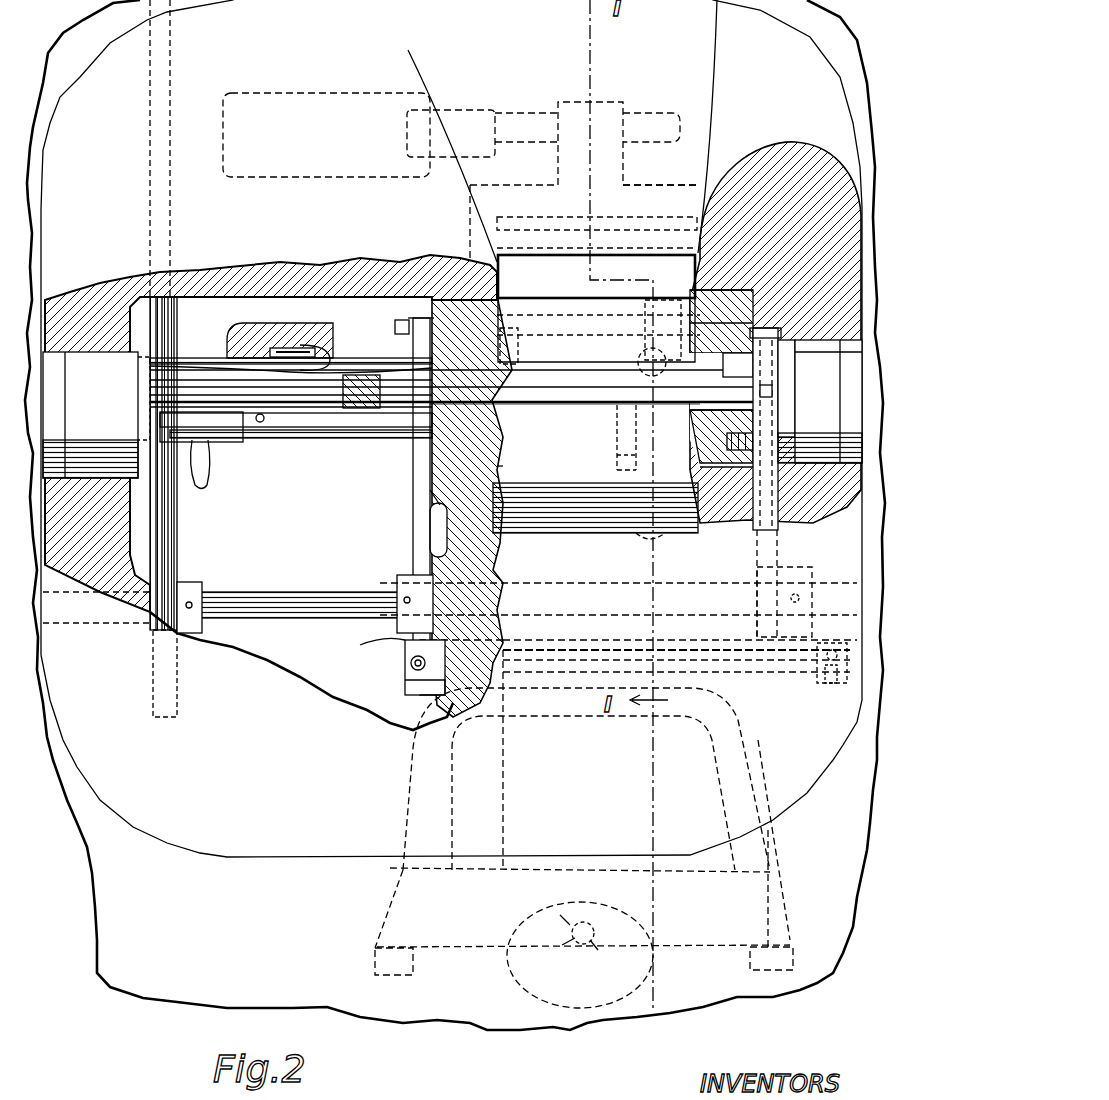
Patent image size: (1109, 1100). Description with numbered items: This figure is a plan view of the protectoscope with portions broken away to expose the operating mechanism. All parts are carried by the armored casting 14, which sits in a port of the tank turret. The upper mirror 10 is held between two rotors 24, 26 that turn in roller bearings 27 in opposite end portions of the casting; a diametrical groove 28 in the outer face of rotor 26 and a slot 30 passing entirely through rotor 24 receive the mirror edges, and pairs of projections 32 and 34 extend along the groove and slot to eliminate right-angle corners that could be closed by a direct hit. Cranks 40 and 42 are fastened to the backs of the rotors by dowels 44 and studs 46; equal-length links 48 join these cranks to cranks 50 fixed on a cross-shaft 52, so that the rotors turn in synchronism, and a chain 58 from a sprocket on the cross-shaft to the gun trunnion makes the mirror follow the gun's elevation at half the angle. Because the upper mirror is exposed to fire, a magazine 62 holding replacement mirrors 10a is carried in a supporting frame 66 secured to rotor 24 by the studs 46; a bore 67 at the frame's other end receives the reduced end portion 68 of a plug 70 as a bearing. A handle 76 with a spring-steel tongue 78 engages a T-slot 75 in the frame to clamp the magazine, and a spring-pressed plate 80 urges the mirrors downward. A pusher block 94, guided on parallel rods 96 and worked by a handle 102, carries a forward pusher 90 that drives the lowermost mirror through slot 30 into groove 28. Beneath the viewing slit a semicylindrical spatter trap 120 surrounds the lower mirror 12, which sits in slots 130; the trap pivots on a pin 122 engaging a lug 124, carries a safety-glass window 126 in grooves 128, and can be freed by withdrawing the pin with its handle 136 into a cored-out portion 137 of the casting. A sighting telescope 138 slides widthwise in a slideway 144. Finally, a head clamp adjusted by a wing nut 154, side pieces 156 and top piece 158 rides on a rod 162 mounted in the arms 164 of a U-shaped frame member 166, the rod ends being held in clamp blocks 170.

The upper mirror 10 is at (558, 402).
The replacement mirrors 10a is at (310, 410).
The lower mirror 12 is at (605, 225).
The armored casting 14 is at (280, 857).
The rotor 24 is at (500, 466).
The rotor 26 is at (660, 480).
The roller bearings 27 is at (435, 505).
The groove 28 is at (700, 402).
The slot 30 is at (505, 408).
The projections 32 is at (507, 402).
The projections 34 is at (690, 372).
The crank 40 is at (432, 470).
The crank 42 is at (760, 470).
The dowels 44 is at (785, 362).
The studs 46 is at (420, 318).
The links 48 is at (413, 540).
The cranks 50 is at (818, 603).
The cross-shaft 52 is at (302, 592).
The chain 58 is at (177, 522).
The magazine 62 is at (190, 358).
The supporting frame 66 is at (298, 323).
The bore 67 is at (138, 432).
The reduced end portion 68 is at (175, 328).
The plug 70 is at (90, 415).
The T-slot 75 is at (283, 348).
The handle 76 is at (330, 356).
The spring-steel tongue 78 is at (305, 350).
The spring-pressed plate 80 is at (210, 370).
The forward pusher 90 is at (282, 428).
The pusher block 94 is at (228, 442).
The parallel rods 96 is at (337, 438).
The handle 102 is at (204, 470).
The spatter trap 120 is at (659, 184).
The pin 122 is at (651, 112).
The lug 124 is at (567, 100).
The safety-glass window 126 is at (586, 361).
The grooves 128 is at (505, 360).
The slots 130 is at (500, 218).
The handle 136 is at (428, 100).
The cored-out portion 137 is at (330, 93).
The telescope 138 is at (640, 537).
The slideway 144 is at (617, 455).
The wing nut 154 is at (594, 931).
The side pieces 156 is at (775, 848).
The top piece 158 is at (654, 780).
The rod 162 is at (746, 660).
The arms 164 is at (420, 690).
The U-shaped frame member 166 is at (555, 640).
The clamp blocks 170 is at (405, 668).